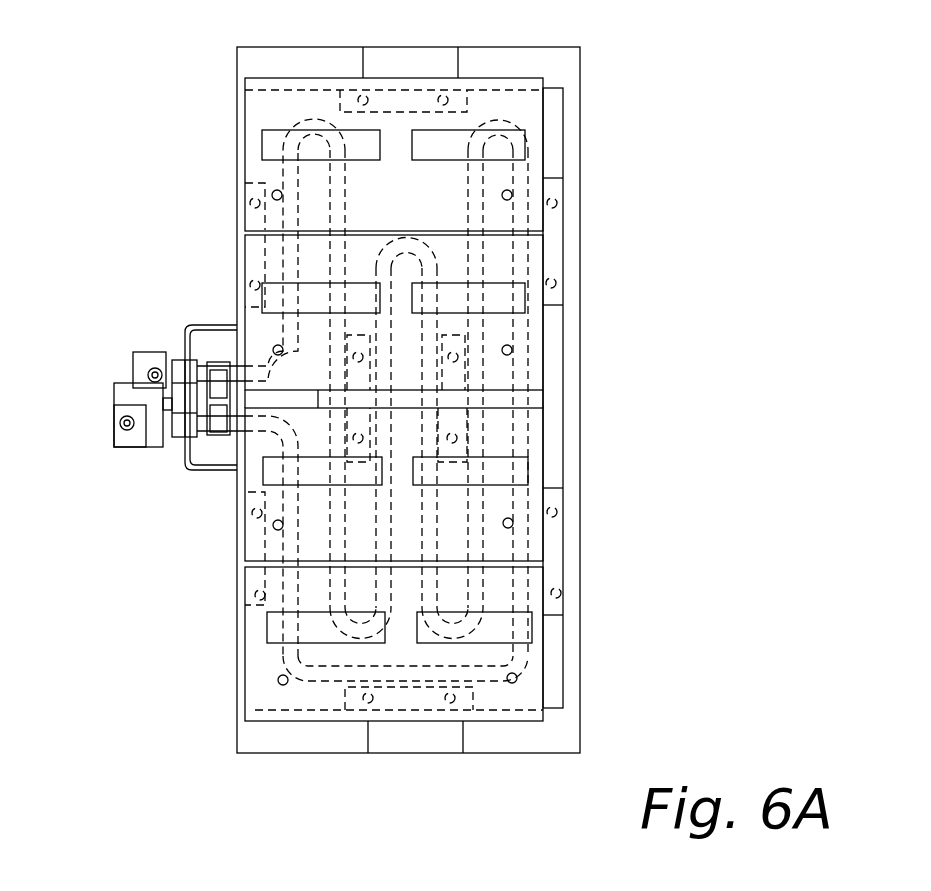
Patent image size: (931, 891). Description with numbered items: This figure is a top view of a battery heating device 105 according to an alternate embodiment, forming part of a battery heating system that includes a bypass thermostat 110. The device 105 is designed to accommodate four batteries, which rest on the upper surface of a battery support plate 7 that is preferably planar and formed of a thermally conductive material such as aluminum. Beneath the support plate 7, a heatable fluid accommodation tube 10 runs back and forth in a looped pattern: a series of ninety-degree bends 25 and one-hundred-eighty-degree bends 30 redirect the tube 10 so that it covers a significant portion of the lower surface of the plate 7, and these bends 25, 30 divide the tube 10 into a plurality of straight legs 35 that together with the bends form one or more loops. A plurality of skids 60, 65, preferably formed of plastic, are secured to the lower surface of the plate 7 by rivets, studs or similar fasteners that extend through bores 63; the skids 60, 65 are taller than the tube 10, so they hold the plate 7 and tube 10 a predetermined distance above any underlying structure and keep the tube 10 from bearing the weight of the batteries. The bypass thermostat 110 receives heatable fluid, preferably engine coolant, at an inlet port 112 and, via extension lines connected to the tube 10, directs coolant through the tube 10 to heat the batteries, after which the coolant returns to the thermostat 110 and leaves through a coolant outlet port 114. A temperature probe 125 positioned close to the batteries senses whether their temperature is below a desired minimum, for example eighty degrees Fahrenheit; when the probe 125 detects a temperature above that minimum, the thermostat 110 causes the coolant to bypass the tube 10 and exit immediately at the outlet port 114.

The battery support plate 7 is at (567, 733).
The heatable fluid accommodation tube 10 is at (507, 352).
The 90-degree bend 25 is at (530, 662).
The 180-degree bend 30 is at (406, 380).
The leg 35 is at (380, 540).
The skid 60 is at (378, 97).
The bore 63 is at (462, 93).
The skid 65 is at (452, 425).
The battery heating device 105 is at (215, 155).
The bypass thermostat 110 is at (149, 374).
The inlet port 112 is at (118, 455).
The coolant outlet port 114 is at (155, 366).
The temperature probe 125 is at (268, 397).